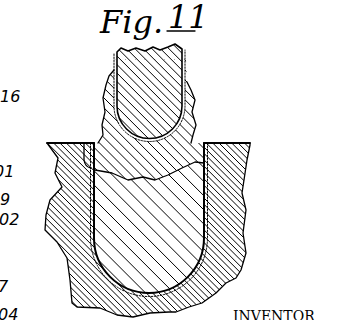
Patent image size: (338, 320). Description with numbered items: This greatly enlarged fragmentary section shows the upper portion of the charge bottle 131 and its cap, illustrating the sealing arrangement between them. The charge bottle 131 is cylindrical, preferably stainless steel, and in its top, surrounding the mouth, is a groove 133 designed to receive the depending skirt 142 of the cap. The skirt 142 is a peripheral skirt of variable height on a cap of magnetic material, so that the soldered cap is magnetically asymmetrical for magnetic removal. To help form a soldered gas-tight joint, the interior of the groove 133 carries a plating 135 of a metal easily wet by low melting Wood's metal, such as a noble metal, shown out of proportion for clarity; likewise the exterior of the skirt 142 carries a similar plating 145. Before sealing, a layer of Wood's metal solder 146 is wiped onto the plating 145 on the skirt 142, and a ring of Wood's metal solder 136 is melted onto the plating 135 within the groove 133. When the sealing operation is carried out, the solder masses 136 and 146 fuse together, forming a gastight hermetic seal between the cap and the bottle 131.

The charge bottle 131 is at (249, 180).
The groove 133 is at (100, 143).
The plating 135 is at (85, 143).
The ring of Wood's metal solder 136 is at (112, 220).
The depending skirt 142 is at (170, 72).
The plating 145 is at (243, 88).
The layer of Wood's metal solder 146 is at (191, 121).